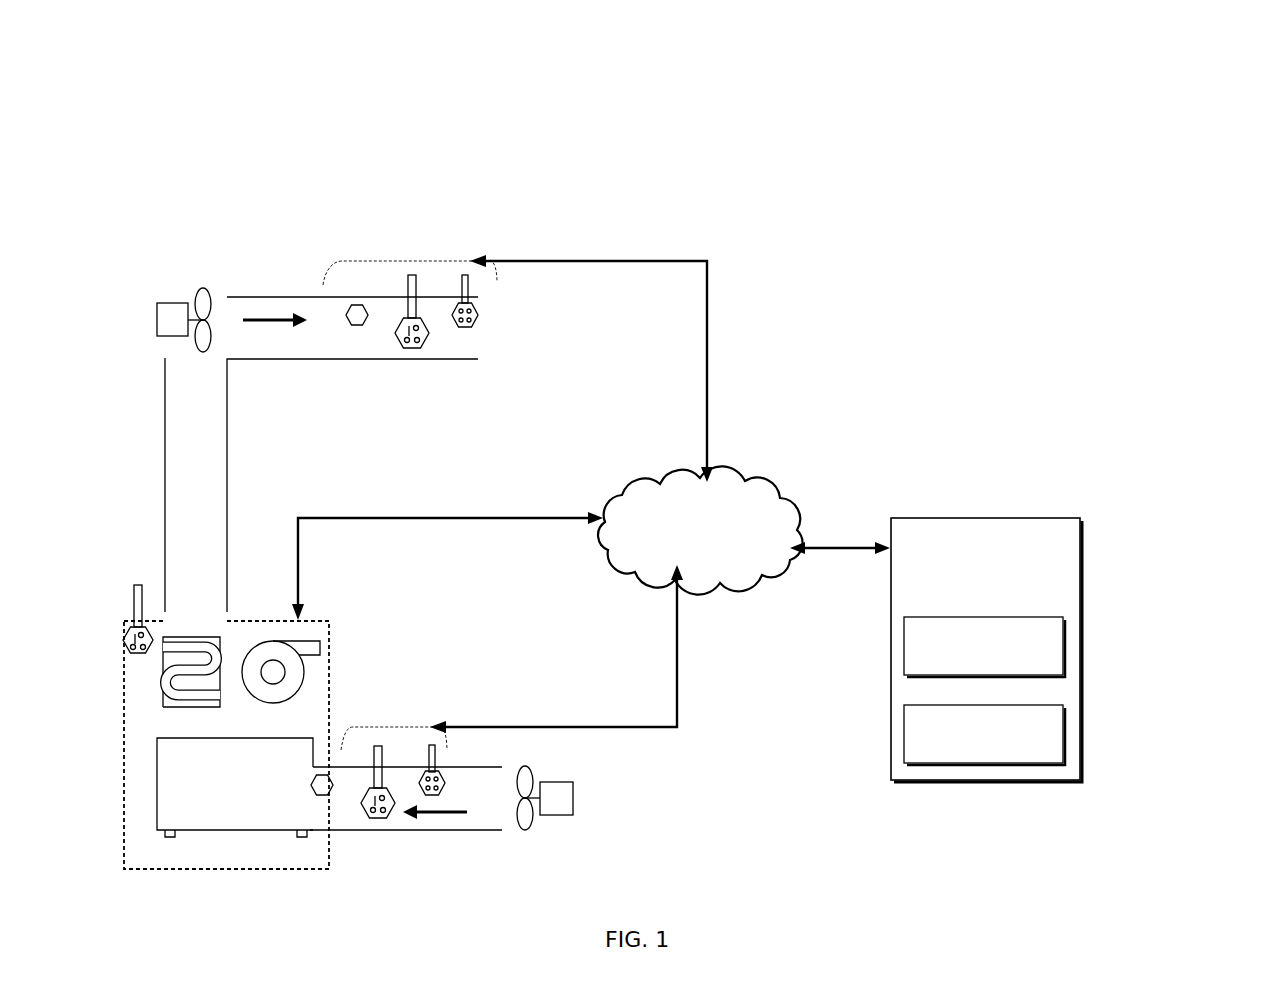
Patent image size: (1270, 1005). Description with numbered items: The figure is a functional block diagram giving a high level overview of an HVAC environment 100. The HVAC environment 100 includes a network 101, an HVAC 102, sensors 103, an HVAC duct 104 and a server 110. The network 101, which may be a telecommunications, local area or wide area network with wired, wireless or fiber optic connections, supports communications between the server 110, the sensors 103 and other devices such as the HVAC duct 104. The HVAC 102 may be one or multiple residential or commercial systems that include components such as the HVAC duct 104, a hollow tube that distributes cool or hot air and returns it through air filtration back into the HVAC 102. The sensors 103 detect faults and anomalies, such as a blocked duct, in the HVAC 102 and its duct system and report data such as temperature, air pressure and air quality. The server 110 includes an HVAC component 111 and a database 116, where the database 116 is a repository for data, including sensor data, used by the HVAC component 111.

The HVAC environment 100 is at (1197, 93).
The network 101 is at (714, 479).
The HVAC 102 is at (329, 643).
The sensors 103 is at (413, 261).
The HVAC duct 104 is at (302, 296).
The server 110 is at (1080, 535).
The HVAC component 111 is at (1027, 617).
The database 116 is at (1027, 705).